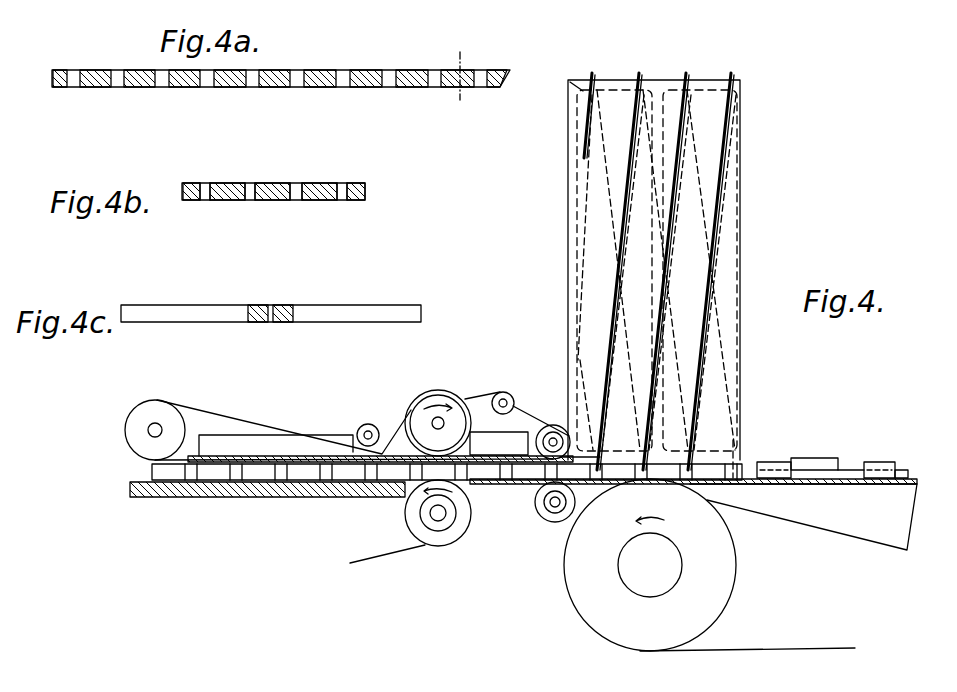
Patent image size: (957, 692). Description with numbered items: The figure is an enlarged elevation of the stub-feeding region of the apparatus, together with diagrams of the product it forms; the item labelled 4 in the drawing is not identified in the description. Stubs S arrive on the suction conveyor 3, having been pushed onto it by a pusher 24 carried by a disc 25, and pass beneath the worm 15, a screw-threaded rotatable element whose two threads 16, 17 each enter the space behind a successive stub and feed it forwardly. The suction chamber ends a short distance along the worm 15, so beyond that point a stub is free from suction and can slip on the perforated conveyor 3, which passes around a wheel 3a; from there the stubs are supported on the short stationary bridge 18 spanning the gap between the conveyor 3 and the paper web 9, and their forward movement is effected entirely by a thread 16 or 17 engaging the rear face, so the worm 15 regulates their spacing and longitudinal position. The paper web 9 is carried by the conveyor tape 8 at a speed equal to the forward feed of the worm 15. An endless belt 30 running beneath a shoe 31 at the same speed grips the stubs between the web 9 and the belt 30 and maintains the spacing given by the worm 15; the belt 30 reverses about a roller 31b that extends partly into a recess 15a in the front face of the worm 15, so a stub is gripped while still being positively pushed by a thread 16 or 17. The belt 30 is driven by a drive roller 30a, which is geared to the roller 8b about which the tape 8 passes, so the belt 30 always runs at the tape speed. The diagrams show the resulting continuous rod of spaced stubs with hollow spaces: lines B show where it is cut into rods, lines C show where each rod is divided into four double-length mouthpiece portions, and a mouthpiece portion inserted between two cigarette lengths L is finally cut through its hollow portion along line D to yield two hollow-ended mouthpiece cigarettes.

In FIG. 4, the suction conveyor 3 is at (790, 651).
In FIG. 4, the wheel 3a is at (712, 568).
In FIG. 4, the backing web 4 is at (803, 517).
In FIG. 4, the conveyor tape 8 is at (408, 552).
In FIG. 4, the roller 8b is at (413, 520).
In FIG. 4, the paper web 9 is at (570, 518).
In FIG. 4, the worm 15 is at (740, 357).
In FIG. 4, the recess 15a is at (575, 458).
In FIG. 4, the thread 16 is at (686, 100).
In FIG. 4, the thread 17 is at (727, 165).
In FIG. 4, the bridge 18 is at (613, 483).
In FIG. 4, the pusher 24 is at (741, 472).
In FIG. 4, the disc 25 is at (848, 470).
In FIG. 4, the endless belt 30 is at (310, 420).
In FIG. 4, the drive roller 30a is at (447, 378).
In FIG. 4, the shoe 31 is at (342, 455).
In FIG. 4, the roller 31b is at (553, 425).
In FIG. 4A, the stub S is at (362, 67).
In FIG. 4A, the cutting line B— B is at (93, 100).
In FIG. 4B, the cutting line B— B is at (183, 225).
In FIG. 4B, the cutting line C— C is at (228, 222).
In FIG. 4C, the cutting line D— D is at (269, 335).
In FIG. 4C, the cigarette length L is at (176, 305).